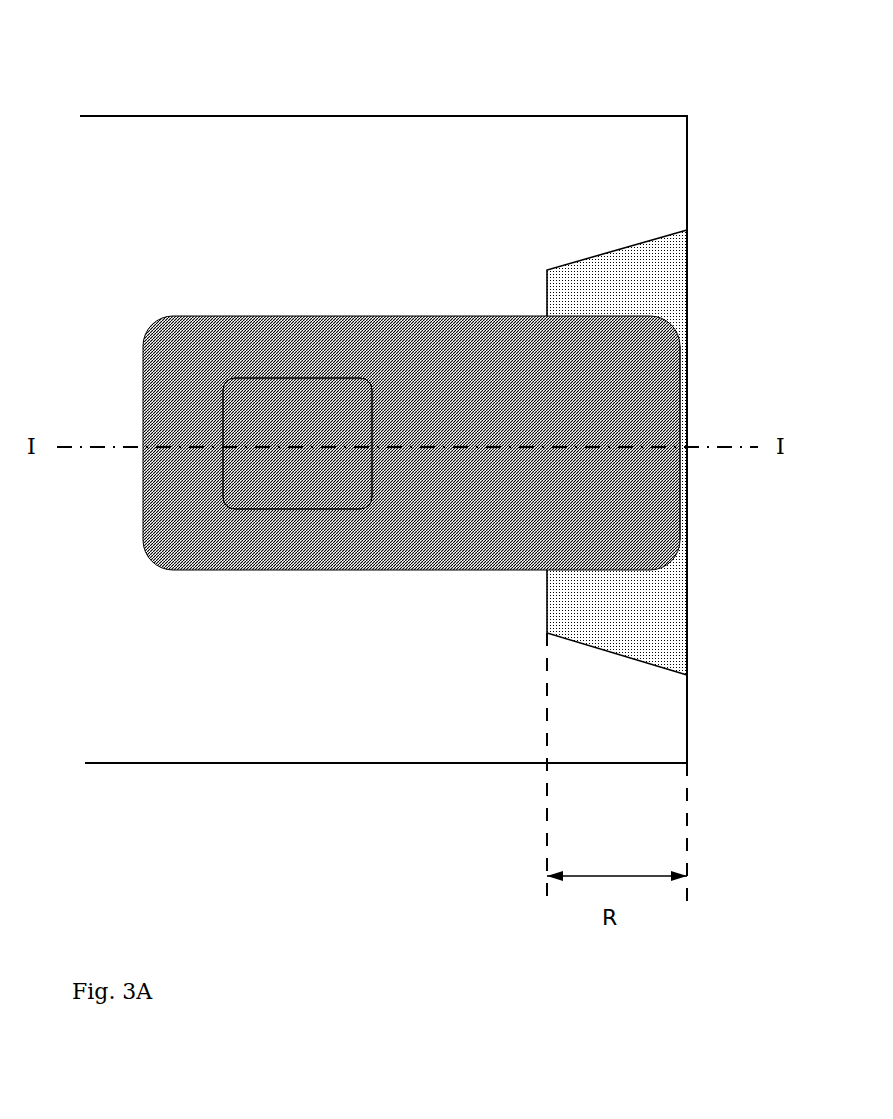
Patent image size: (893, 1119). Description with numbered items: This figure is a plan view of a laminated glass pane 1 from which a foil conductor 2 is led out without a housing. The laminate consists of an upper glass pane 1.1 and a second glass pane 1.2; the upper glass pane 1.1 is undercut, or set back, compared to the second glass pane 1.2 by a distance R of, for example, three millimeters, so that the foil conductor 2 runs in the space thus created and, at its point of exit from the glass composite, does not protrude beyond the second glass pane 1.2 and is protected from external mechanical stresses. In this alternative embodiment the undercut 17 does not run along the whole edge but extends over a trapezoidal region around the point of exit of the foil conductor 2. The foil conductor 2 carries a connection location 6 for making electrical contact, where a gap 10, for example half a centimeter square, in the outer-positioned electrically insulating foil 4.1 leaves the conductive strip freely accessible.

The laminated glass pane 1 is at (296, 116).
The upper glass pane 1.1 is at (197, 178).
The second glass pane 1.2 is at (626, 290).
The foil conductor 2 is at (672, 560).
The electrically insulating foil 4.1 is at (608, 520).
The connection location 6 is at (338, 405).
The gap 10 is at (302, 380).
The undercut 17 is at (632, 657).